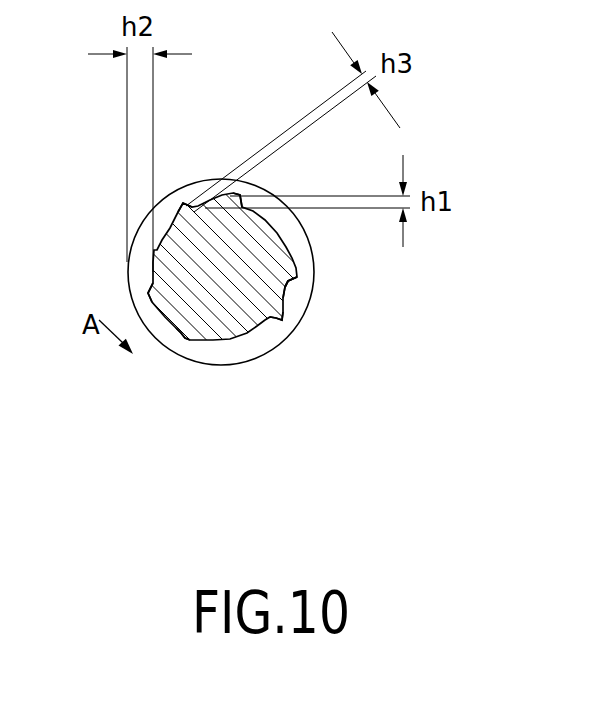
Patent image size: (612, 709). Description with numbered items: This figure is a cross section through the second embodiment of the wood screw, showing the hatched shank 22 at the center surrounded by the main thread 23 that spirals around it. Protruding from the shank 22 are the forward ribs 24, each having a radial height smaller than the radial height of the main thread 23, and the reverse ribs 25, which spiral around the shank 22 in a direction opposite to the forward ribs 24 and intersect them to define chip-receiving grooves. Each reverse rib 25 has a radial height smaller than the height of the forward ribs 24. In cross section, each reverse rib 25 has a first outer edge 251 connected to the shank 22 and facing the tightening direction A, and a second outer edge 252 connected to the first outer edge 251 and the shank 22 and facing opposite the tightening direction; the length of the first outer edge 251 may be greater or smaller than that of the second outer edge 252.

The shank 22 is at (214, 337).
The main thread 23 is at (305, 262).
The forward rib 24 is at (253, 186).
The reverse rib 25 is at (181, 186).
The first outer edge 251 is at (297, 276).
The second outer edge 252 is at (290, 284).